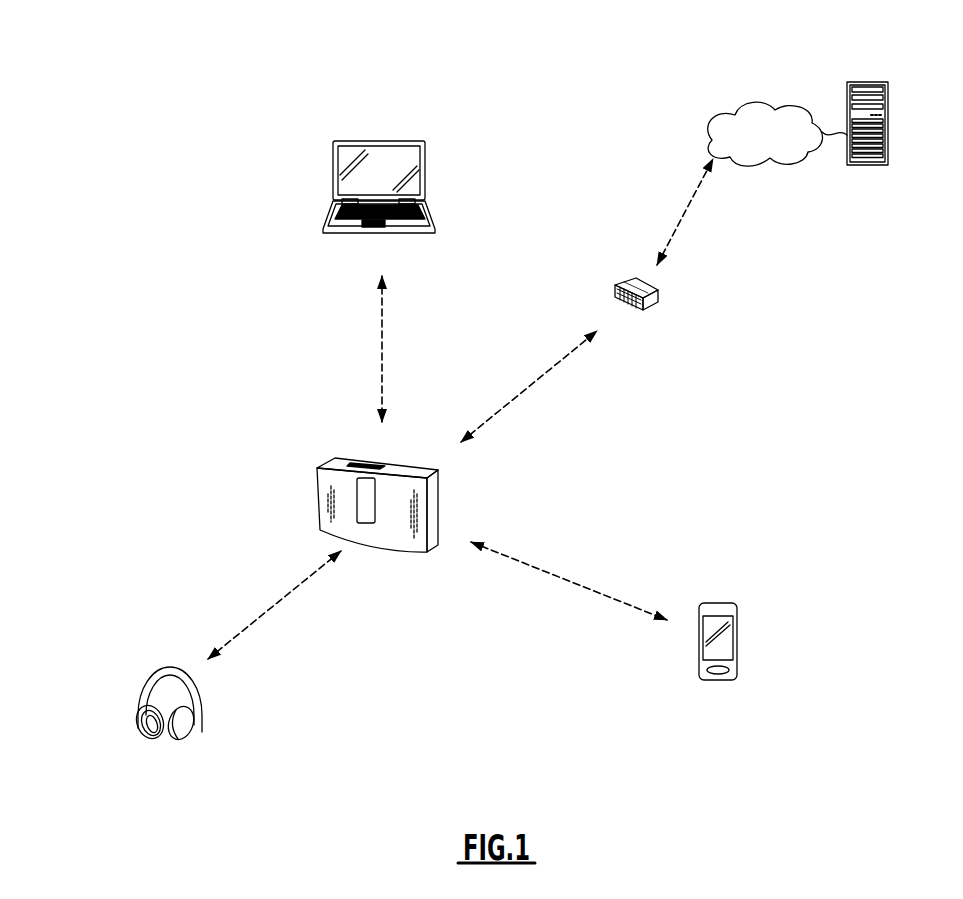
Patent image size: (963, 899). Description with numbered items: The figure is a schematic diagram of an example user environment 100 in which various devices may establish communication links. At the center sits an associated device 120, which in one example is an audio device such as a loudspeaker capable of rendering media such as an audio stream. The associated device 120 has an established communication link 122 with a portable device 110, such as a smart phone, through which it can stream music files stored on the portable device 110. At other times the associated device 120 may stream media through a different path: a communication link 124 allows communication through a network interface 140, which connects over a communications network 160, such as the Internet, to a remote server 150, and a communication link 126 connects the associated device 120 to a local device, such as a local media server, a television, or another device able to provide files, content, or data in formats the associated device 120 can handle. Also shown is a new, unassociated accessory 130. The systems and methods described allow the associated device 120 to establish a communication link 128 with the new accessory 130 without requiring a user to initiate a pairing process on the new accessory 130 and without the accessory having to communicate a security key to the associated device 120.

The user environment 100 is at (132, 272).
The portable device 110 is at (713, 682).
The associated device 120 is at (320, 505).
The communication link 122 is at (565, 580).
The communication link 124 is at (523, 393).
The communication link 126 is at (383, 346).
The communication link 128 is at (270, 607).
The new accessory 130 is at (160, 668).
The network interface 140 is at (650, 310).
The remote server 150 is at (865, 82).
The communications network 160 is at (750, 103).